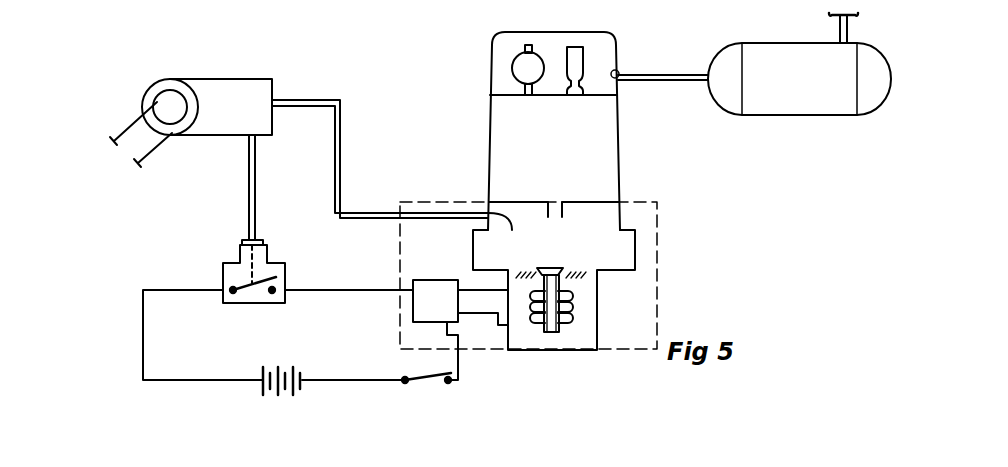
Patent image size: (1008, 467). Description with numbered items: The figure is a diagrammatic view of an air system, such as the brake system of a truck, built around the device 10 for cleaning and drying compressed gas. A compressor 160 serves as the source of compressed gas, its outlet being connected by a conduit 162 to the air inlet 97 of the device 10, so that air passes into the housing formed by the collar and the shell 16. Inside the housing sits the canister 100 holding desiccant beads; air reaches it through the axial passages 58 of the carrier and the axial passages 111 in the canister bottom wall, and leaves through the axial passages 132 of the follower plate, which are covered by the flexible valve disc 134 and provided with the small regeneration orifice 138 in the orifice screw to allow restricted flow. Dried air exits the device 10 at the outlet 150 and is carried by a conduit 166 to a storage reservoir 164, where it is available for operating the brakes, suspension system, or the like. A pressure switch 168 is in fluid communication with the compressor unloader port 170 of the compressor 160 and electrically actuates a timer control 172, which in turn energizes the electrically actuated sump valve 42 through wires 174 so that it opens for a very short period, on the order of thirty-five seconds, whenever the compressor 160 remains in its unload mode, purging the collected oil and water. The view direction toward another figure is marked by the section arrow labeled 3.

The section view direction FIG. 3 is at (372, 8).
The device for cleaning and drying compressed gas 10 is at (474, 49).
The shell 16 is at (562, 32).
The sump valve 42 is at (553, 268).
The axial passages 58 is at (554, 185).
The air inlet 97 is at (515, 244).
The canister 100 is at (490, 133).
The axial passages 111 is at (555, 202).
The axial passages 132 is at (462, 70).
The flexible valve disc 134 is at (512, 68).
The regeneration orifice 138 is at (580, 84).
The outlet 150 is at (617, 71).
The compressor 160 is at (201, 78).
The conduit 162 is at (333, 148).
The storage reservoir 164 is at (810, 115).
The conduit 166 is at (672, 83).
The pressure switch 168 is at (223, 266).
The compressor unloader port 170 is at (249, 197).
The timer control 172 is at (430, 279).
The wires 174 is at (480, 291).